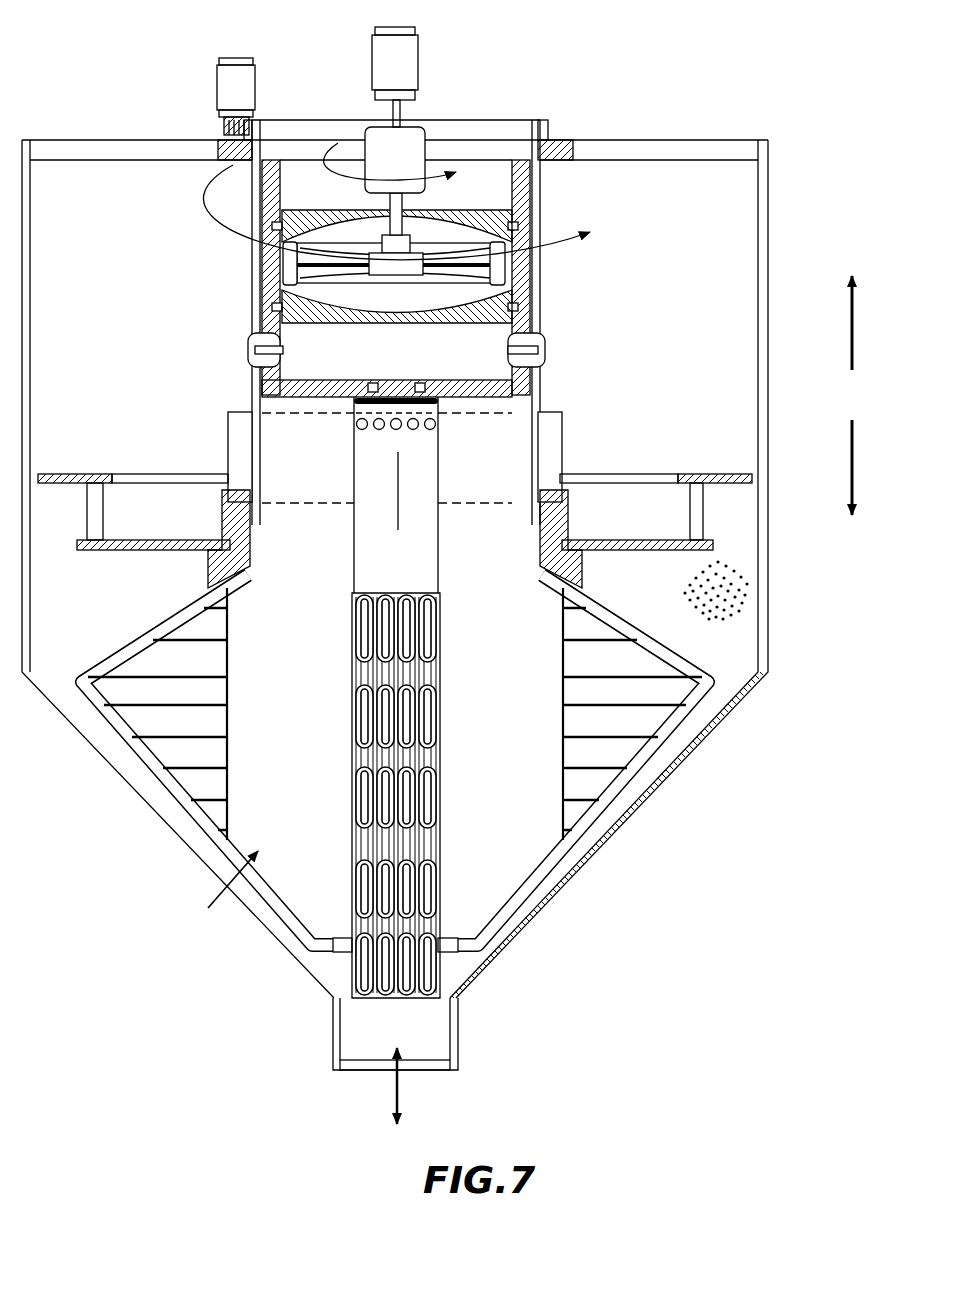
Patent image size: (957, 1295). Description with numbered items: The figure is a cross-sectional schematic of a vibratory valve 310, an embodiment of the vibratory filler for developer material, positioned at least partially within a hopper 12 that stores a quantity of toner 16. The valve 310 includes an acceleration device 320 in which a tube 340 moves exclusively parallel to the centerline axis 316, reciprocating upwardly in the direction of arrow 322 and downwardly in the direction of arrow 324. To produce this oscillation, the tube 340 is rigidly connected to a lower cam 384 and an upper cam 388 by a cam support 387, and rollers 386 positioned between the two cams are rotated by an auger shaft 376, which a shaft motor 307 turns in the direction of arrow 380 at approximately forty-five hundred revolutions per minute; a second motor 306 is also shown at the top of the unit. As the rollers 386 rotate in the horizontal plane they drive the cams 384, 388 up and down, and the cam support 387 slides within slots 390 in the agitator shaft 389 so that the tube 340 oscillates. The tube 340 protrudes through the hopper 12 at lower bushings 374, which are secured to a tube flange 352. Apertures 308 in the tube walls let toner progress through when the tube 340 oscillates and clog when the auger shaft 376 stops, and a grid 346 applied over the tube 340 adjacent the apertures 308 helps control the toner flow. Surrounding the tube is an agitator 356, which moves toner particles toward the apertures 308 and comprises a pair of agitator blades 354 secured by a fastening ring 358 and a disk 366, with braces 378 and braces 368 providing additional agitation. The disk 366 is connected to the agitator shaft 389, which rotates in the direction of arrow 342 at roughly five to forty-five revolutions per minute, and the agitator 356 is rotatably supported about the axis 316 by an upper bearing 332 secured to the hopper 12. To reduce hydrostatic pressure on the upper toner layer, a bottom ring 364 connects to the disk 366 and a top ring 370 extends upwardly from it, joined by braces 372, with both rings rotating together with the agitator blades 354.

The hopper 12 is at (770, 230).
The toner 16 is at (730, 585).
The motor 306 is at (238, 72).
The shaft motor 307 is at (410, 62).
The apertures 308 is at (424, 690).
The vibratory valve 310 is at (742, 104).
The centerline axis 316 is at (399, 490).
The acceleration device 320 is at (281, 987).
The arrow (upward direction) 322 is at (845, 322).
The arrow (downward direction) 324 is at (845, 480).
The upper bearing 332 is at (568, 140).
The tube 340 is at (440, 443).
The arrow (agitator rotation) 342 is at (533, 236).
The grid 346 is at (410, 594).
The tube flange 352 is at (458, 1015).
The agitator blades 354 is at (122, 648).
The agitator 356 is at (102, 742).
The fastening ring 358 is at (340, 947).
The bottom ring 364 is at (137, 543).
The disk 366 is at (242, 428).
The braces 368 is at (230, 654).
The top ring 370 is at (88, 476).
The braces 372 is at (87, 506).
The lower bushings 374 is at (447, 1034).
The auger shaft 376 is at (401, 110).
The braces 378 is at (177, 678).
The arrow (auger shaft rotation) 380 is at (436, 168).
The lower cam 384 is at (498, 317).
The rollers 386 is at (506, 268).
The cam support 387 is at (518, 165).
The upper cam 388 is at (487, 218).
The agitator shaft 389 is at (582, 231).
The slots 390 is at (268, 341).